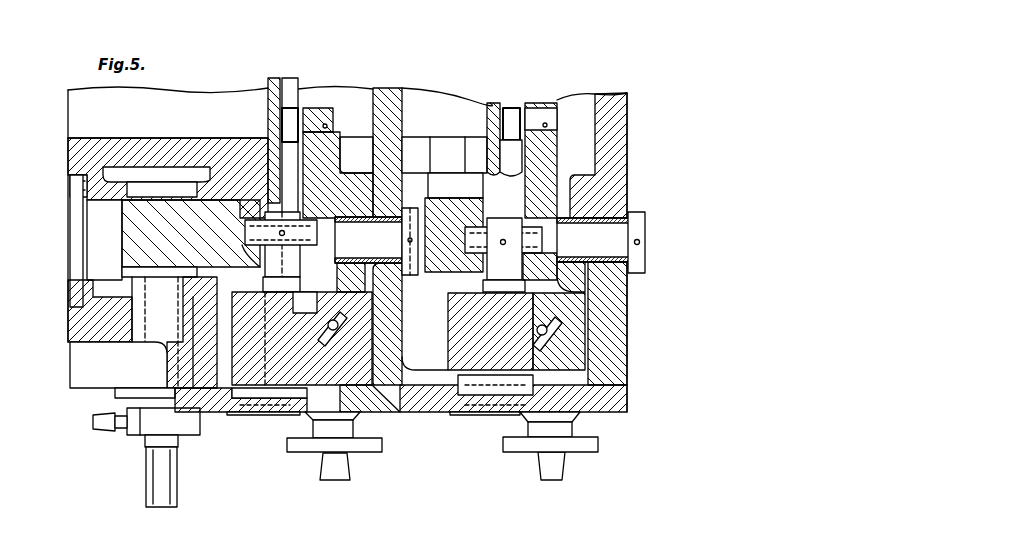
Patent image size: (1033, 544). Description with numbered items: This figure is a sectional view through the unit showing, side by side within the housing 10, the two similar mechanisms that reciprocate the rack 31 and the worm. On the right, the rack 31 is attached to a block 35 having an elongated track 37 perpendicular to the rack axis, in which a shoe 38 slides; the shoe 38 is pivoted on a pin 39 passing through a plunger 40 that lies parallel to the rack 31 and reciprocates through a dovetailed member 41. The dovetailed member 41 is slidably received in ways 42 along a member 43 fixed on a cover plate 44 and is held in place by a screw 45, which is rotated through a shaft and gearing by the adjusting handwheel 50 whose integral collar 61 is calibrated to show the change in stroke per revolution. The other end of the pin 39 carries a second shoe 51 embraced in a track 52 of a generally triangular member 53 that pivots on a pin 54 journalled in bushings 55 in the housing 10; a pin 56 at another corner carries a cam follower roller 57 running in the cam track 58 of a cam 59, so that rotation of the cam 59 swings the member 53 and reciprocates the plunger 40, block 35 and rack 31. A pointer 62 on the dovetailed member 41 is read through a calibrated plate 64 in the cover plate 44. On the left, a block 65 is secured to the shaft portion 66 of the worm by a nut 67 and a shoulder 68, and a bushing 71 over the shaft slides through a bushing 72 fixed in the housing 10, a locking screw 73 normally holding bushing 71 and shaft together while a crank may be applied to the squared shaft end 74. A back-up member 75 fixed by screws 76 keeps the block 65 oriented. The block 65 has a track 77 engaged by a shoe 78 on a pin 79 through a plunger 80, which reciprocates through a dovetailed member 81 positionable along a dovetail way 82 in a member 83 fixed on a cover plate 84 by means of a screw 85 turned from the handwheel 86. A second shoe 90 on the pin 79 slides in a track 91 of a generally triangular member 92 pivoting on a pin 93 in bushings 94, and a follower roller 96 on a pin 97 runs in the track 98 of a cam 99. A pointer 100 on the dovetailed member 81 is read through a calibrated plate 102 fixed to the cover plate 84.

The housing 10 is at (390, 88).
The rack 31 is at (430, 150).
The block 35 is at (418, 215).
The elongated track 37 is at (455, 240).
The shoe 38 is at (480, 255).
The pin 39 is at (494, 250).
The plunger 40 is at (525, 287).
The dovetailed member 41 is at (448, 312).
The ways 42 is at (540, 318).
The member 43 is at (588, 345).
The cover plate 44 is at (625, 412).
The screw 45 is at (535, 340).
The adjusting handwheel 50 is at (523, 454).
The second shoe 51 is at (545, 245).
The track 52 is at (545, 236).
The generally triangular member 53 is at (557, 103).
The pin 54 is at (605, 262).
The bushings 55 is at (625, 215).
The pin 56 is at (552, 127).
The cam follower roller 57 is at (515, 108).
The cam track 58 is at (473, 187).
The cam 59 is at (487, 122).
The collar 61 is at (592, 437).
The pointer 62 is at (468, 418).
The calibrated plate 64 is at (492, 418).
The block 65 is at (200, 267).
The shaft portion 66 is at (210, 172).
The nut 67 is at (197, 190).
The shoulder 68 is at (150, 295).
The bushing 71 is at (190, 435).
The bushing 72 is at (115, 398).
The locking screw 73 is at (118, 432).
The squared shaft end 74 is at (178, 484).
The back-up member 75 is at (70, 245).
The screws 76 is at (72, 195).
The track 77 is at (252, 250).
The shoe 78 is at (279, 214).
The pin 79 is at (282, 244).
The plunger 80 is at (300, 285).
The dovetailed member 81 is at (232, 310).
The dovetail way 82 is at (310, 322).
The member 83 is at (372, 410).
The cover plate 84 is at (183, 378).
The screw 85 is at (345, 330).
The handwheel 86 is at (350, 455).
The second shoe 90 is at (318, 236).
The track 91 is at (318, 243).
The generally triangular shaped member 92 is at (337, 160).
The pin 93 is at (368, 240).
The bushings 94 is at (368, 253).
The follower roller 96 is at (298, 108).
The pin 97 is at (333, 112).
The track 98 is at (285, 78).
The cam 99 is at (270, 84).
The pointer 100 is at (258, 416).
The calibrated plate 102 is at (277, 416).